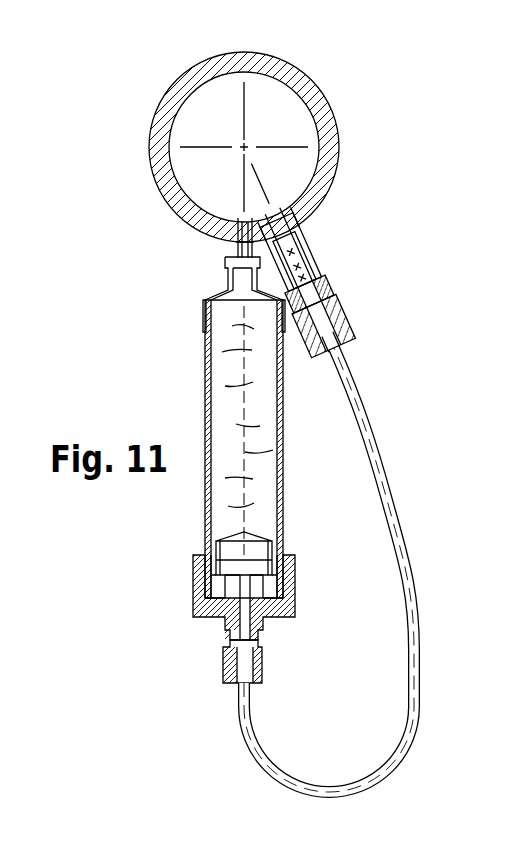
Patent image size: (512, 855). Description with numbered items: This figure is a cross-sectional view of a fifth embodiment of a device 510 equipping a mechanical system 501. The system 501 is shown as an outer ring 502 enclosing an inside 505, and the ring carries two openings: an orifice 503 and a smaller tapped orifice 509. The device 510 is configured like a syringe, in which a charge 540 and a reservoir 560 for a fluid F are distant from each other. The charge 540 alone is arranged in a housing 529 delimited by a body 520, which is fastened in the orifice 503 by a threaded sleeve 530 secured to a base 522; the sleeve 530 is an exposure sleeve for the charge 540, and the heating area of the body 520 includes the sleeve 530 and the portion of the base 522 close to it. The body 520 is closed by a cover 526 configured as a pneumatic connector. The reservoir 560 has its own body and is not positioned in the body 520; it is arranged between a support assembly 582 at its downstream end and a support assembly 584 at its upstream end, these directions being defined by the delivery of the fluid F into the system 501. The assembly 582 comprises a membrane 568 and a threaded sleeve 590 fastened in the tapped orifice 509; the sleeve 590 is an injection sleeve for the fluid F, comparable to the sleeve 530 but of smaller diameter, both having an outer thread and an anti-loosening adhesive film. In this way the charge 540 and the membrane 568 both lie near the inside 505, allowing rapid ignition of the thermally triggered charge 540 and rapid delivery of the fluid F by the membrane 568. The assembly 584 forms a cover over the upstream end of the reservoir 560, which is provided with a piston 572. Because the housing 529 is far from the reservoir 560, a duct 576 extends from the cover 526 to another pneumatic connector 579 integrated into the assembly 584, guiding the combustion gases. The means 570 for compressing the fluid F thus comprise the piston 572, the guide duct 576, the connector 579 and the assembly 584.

The mechanical system 501 is at (160, 80).
The outer ring 502 is at (160, 126).
The orifice 503 is at (305, 206).
The inside 505 is at (280, 115).
The tapped orifice 509 is at (228, 223).
The device 510 is at (167, 610).
The body 520 is at (345, 303).
The base 522 is at (310, 228).
The cover 526 is at (350, 325).
The housing 529 is at (322, 259).
The threaded sleeve 530 is at (307, 219).
The charge 540 is at (318, 286).
The reservoir 560 is at (283, 420).
The membrane 568 is at (212, 298).
The means for compressing the fluid 570 is at (208, 680).
The piston 572 is at (233, 545).
The duct 576 is at (252, 764).
The pneumatic connector 579 is at (262, 657).
The support assembly 582 is at (225, 268).
The support assembly 584 is at (288, 582).
The threaded sleeve 590 is at (238, 252).
The fluid F is at (230, 410).